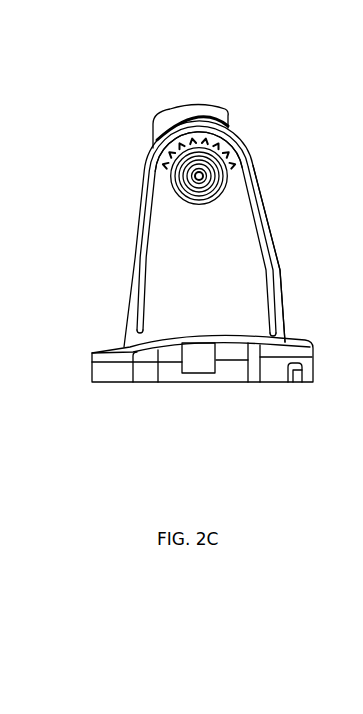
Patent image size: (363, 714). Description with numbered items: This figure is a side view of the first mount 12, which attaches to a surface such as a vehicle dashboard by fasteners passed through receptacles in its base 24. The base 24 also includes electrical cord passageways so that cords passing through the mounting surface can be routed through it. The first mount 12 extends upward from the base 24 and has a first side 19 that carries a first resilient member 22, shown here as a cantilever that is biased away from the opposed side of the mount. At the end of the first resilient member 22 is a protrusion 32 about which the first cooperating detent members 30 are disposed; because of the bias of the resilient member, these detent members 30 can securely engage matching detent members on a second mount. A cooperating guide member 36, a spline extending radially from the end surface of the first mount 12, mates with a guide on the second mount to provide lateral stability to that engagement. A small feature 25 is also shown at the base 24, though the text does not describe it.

The first mount 12 is at (201, 226).
The first side 19 is at (299, 254).
The first resilient member 22 is at (211, 306).
The base 24 is at (201, 358).
The notch 25 is at (319, 393).
The first cooperating detent members 30 is at (234, 136).
The protrusion 32 is at (251, 194).
The cooperating guide member 36 is at (171, 105).